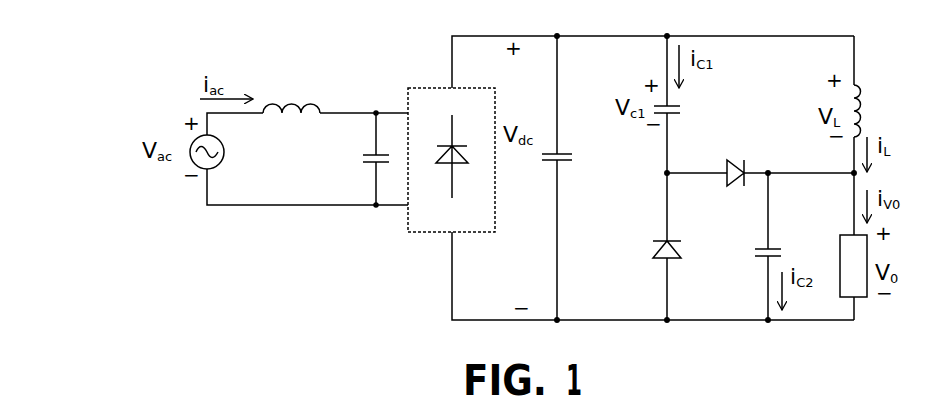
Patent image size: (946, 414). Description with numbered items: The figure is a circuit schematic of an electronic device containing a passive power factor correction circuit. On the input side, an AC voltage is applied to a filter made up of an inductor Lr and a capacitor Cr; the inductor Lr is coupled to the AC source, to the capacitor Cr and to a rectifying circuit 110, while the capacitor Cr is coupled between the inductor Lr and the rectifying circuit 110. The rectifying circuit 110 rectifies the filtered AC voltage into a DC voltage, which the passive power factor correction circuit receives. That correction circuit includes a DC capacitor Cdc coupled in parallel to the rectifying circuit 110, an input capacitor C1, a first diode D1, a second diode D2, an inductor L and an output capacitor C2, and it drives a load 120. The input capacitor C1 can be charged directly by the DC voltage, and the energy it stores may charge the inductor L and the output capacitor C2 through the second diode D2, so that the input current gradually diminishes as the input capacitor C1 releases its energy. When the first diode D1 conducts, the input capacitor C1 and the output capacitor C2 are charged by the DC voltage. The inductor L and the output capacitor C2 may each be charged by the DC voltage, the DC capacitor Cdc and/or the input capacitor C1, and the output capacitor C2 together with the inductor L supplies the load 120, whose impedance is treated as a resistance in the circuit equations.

The rectifying circuit 110 is at (430, 85).
The load 120 is at (860, 298).
The inductor Lr is at (291, 94).
The capacitor Cr is at (361, 159).
The DC capacitor Cdc is at (575, 178).
The input capacitor C1 is at (682, 104).
The output capacitor C2 is at (753, 246).
The first diode D1 is at (731, 156).
The second diode D2 is at (648, 246).
The inductor L is at (868, 111).